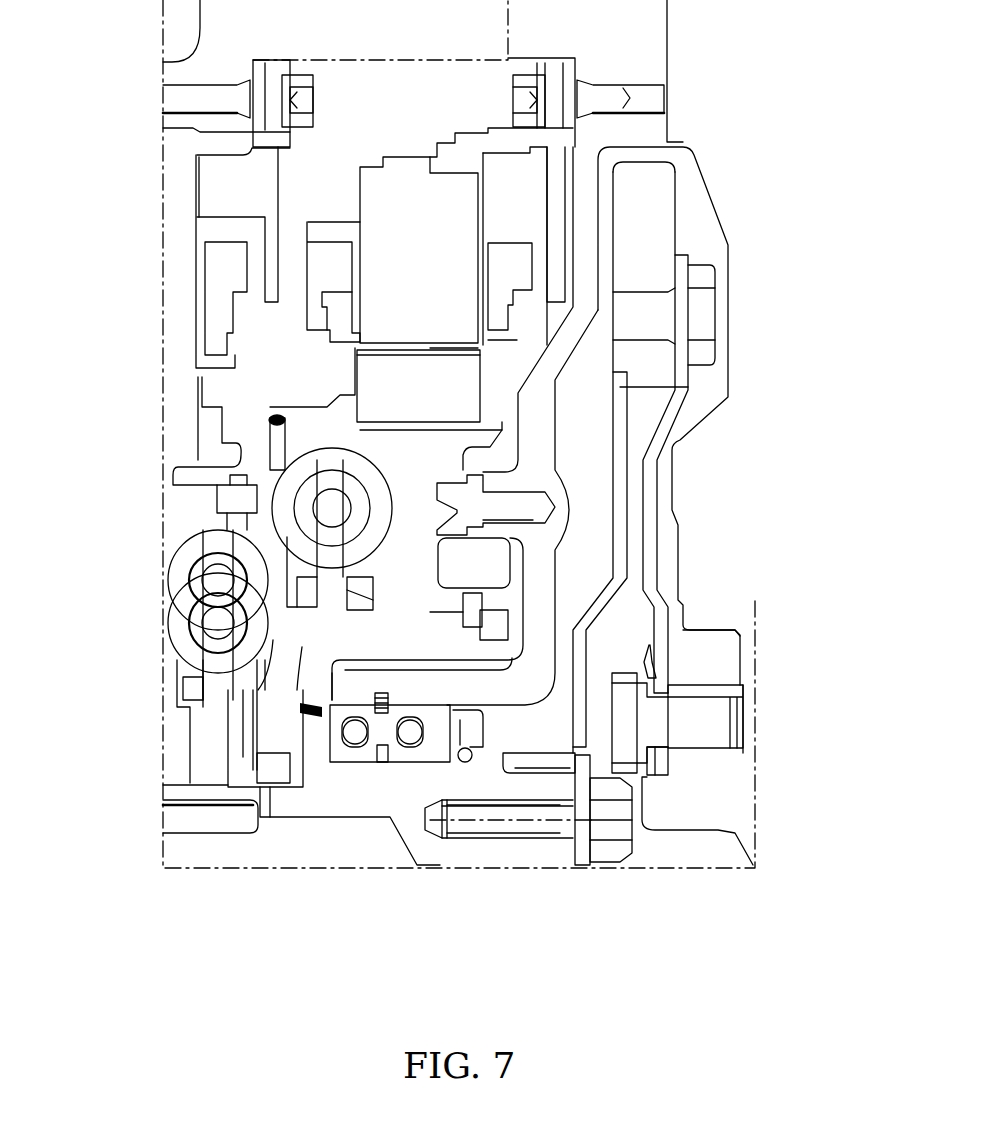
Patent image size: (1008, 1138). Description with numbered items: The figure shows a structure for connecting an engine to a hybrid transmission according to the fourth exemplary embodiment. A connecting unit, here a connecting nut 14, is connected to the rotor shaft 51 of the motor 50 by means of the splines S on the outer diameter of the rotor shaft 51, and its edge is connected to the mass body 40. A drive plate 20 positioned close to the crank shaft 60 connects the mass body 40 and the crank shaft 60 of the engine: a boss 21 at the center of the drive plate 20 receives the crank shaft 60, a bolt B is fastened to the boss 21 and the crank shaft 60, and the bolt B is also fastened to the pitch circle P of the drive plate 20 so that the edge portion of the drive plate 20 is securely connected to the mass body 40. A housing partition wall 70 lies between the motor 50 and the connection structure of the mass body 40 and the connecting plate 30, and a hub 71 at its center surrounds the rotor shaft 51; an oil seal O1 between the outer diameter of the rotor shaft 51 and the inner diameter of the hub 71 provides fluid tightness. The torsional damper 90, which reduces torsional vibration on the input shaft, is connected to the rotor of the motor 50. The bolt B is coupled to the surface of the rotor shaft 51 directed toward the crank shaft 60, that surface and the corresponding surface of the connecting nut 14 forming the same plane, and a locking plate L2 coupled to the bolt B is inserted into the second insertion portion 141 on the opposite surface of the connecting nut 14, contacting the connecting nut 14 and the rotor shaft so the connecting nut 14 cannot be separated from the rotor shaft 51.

The motor 50 is at (350, 192).
The mass body 40 is at (662, 183).
The housing partition wall 70 is at (565, 340).
The connecting plate 30 is at (620, 447).
The drive plate 20 is at (650, 507).
The oil seal O1 is at (487, 727).
The second insertion portion 141 is at (585, 752).
The bolt B is at (717, 722).
The boss 21 is at (663, 763).
The crank shaft 60 is at (737, 812).
The torsional damper 90 is at (172, 516).
The hub 71 is at (345, 688).
The connecting nut 14 is at (445, 752).
The rotor shaft 51 is at (445, 857).
The pitch circle P is at (488, 823).
The splines S is at (540, 770).
The locking plate L2 is at (583, 862).